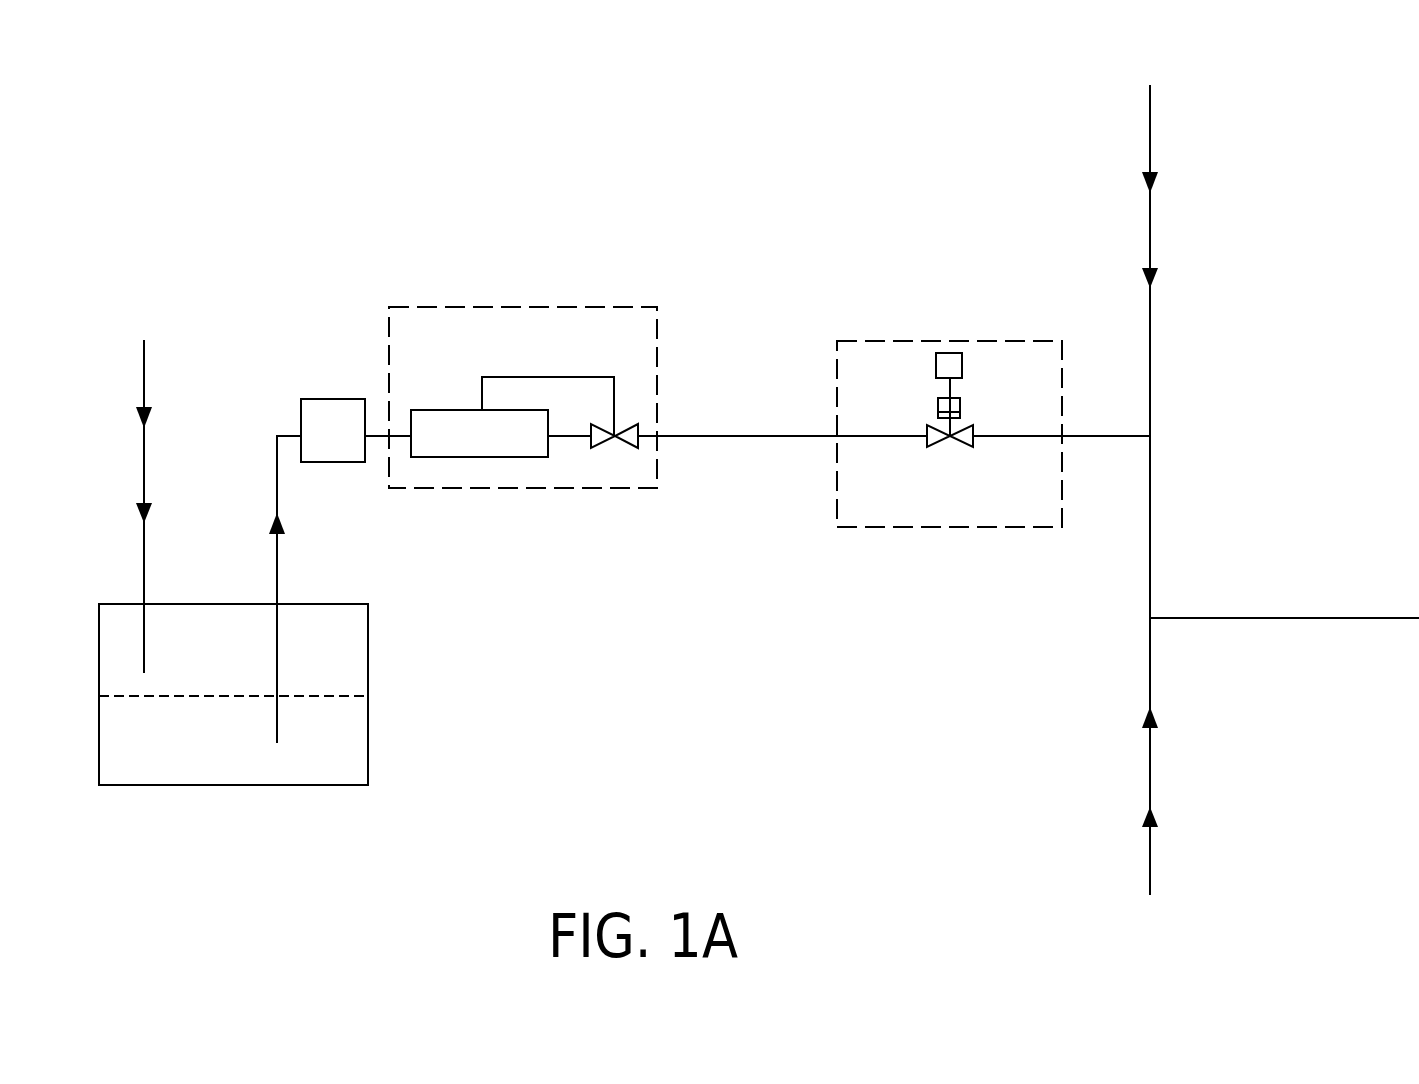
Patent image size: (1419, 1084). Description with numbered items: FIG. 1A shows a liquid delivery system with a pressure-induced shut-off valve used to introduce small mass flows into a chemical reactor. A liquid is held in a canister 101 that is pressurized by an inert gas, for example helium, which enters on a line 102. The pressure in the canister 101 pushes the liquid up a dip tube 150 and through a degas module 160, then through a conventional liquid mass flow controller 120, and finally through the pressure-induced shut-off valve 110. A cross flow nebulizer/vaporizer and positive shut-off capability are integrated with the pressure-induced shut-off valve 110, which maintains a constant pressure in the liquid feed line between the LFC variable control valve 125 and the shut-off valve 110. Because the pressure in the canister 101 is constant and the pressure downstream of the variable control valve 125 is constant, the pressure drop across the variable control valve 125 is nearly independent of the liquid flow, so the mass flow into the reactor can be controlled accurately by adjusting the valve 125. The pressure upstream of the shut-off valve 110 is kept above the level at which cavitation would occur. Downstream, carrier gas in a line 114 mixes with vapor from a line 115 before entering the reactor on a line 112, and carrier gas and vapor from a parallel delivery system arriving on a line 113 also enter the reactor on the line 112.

The canister 101 is at (353, 725).
The line 102 is at (143, 465).
The pressure-induced shut-off valve 110 is at (947, 508).
The line 112 is at (1198, 617).
The line 113 is at (1152, 752).
The line 114 is at (1152, 235).
The line 115 is at (1113, 435).
The liquid mass flow controller 120 is at (493, 322).
The LFC variable control valve 125 is at (611, 440).
The dip tube 150 is at (281, 568).
The degas module 160 is at (336, 416).